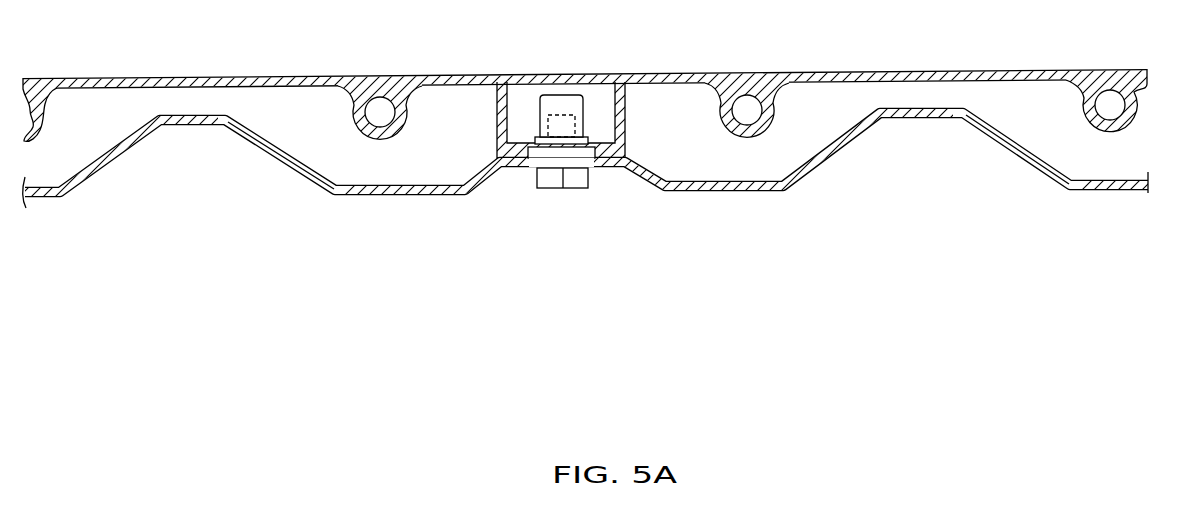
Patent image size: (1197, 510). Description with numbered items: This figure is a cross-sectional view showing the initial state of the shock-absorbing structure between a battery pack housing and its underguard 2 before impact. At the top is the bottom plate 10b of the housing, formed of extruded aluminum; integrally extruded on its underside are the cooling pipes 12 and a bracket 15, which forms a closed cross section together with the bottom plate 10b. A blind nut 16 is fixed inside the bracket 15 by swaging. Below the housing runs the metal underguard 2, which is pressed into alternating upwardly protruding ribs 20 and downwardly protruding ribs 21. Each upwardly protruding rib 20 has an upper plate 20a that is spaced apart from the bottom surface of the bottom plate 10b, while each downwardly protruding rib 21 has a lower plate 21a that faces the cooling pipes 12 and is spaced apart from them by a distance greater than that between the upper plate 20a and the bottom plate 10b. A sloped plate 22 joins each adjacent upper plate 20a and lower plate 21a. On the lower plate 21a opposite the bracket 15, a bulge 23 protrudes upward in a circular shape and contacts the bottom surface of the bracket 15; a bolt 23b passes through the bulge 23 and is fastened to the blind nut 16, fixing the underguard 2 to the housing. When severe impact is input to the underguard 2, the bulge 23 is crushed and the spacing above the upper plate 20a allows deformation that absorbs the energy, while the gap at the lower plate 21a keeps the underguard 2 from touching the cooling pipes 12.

The bottom plate 10b is at (1015, 68).
The cooling pipe 12 is at (740, 112).
The bracket 15 is at (620, 123).
The blind nut 16 is at (550, 112).
The underguard 2 is at (585, 179).
The upwardly protruding rib 20 is at (926, 158).
The upper plate 20a is at (897, 119).
The downwardly protruding rib 21 is at (572, 214).
The lower plate 21a is at (406, 196).
The sloped plate 22 is at (820, 153).
The bulge 23 is at (534, 177).
The bolt 23b is at (546, 189).